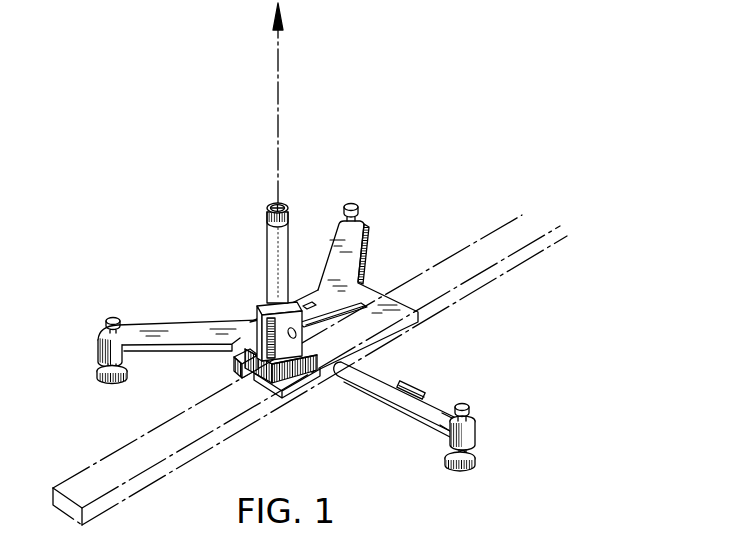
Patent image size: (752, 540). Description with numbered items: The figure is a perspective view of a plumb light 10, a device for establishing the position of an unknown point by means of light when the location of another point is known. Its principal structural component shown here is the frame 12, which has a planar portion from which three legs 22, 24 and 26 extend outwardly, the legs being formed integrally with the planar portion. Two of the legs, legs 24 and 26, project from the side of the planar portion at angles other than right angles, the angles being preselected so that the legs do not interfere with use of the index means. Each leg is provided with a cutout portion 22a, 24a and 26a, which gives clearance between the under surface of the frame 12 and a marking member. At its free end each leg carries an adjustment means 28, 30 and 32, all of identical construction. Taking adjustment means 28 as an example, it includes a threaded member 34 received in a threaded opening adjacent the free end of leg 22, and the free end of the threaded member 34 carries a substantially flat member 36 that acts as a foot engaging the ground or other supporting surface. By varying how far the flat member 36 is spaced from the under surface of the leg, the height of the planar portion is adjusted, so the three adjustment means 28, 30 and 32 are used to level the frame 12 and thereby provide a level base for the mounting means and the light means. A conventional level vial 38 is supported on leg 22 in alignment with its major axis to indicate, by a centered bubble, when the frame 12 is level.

The plumb light 10 is at (214, 213).
The frame 12 is at (376, 280).
The leg 22 is at (388, 400).
The cutout portion 22a is at (442, 440).
The leg 24 is at (340, 223).
The cutout portion 24a is at (364, 268).
The leg 26 is at (163, 325).
The cutout portion 26a is at (123, 354).
The adjustment means 28 is at (470, 397).
The adjustment means 30 is at (353, 196).
The adjustment means 32 is at (109, 316).
The threaded member 34 is at (474, 457).
The flat member 36 is at (470, 472).
The level vial 38 is at (411, 381).